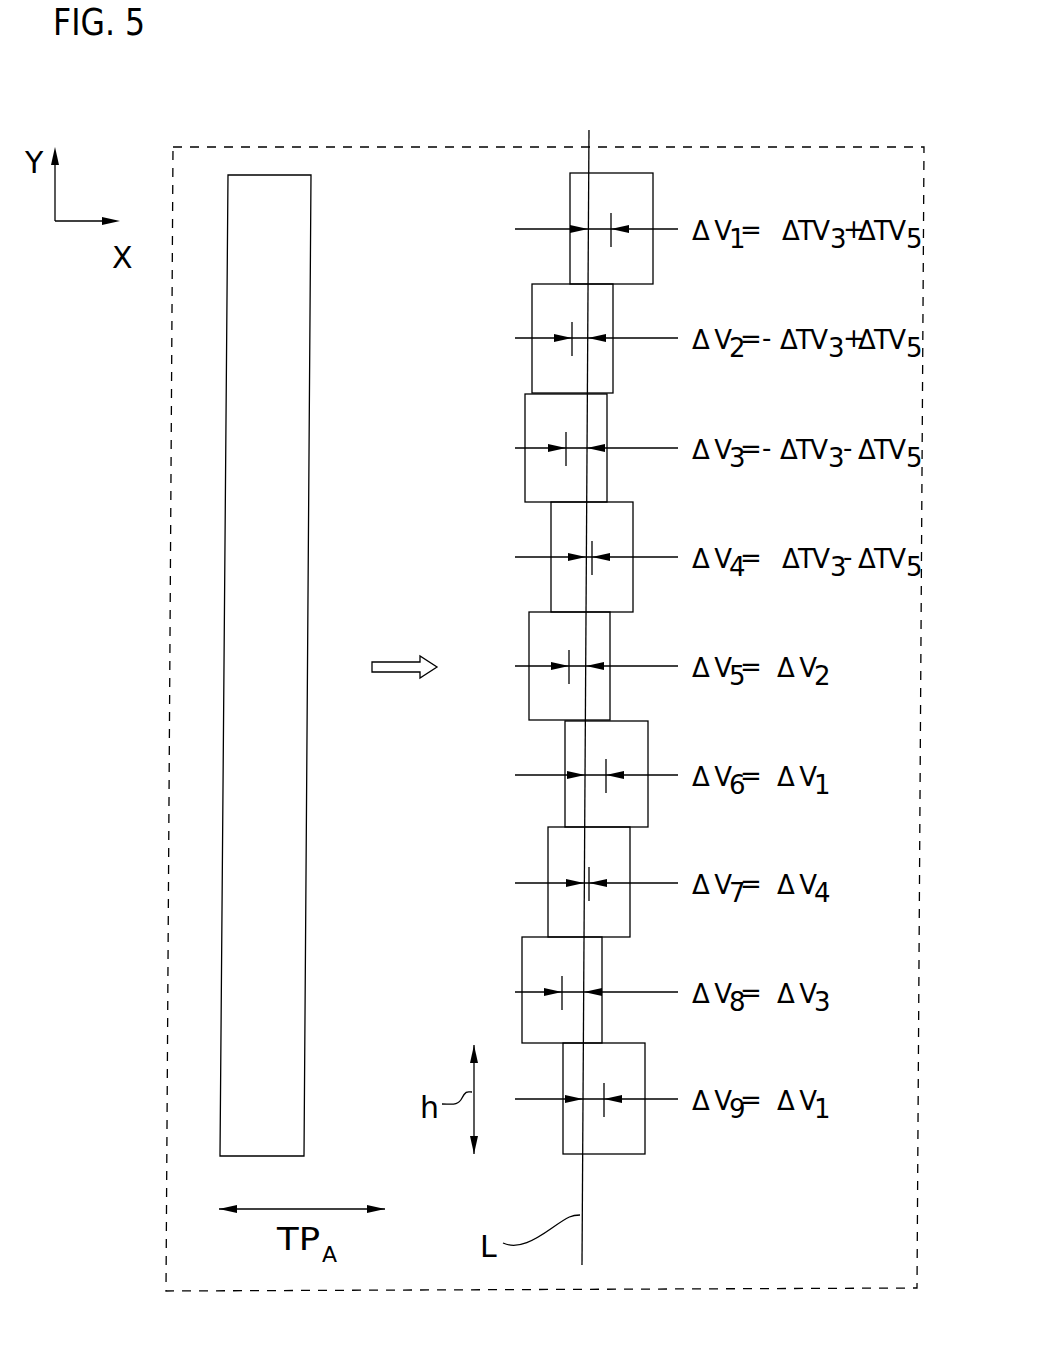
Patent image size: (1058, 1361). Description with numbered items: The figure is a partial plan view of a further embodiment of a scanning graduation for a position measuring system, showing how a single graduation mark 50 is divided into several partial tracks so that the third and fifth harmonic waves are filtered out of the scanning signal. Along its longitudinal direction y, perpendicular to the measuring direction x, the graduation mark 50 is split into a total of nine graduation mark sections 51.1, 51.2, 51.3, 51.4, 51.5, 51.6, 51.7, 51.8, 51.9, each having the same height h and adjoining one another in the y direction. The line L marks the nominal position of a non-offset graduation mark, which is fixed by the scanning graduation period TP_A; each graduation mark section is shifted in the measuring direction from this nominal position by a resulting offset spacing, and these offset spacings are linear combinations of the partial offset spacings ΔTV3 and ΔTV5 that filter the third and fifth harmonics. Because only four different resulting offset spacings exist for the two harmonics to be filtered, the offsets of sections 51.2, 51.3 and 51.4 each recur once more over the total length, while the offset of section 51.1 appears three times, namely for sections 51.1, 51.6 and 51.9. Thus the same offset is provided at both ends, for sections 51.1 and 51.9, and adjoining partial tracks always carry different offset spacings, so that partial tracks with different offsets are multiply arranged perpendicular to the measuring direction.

The graduation mark 50 is at (235, 829).
The graduation mark section 51.1 is at (597, 203).
The graduation mark section 51.2 is at (597, 312).
The graduation mark section 51.3 is at (597, 422).
The graduation mark section 51.4 is at (597, 531).
The graduation mark section 51.5 is at (597, 640).
The graduation mark section 51.6 is at (597, 749).
The graduation mark section 51.7 is at (597, 857).
The graduation mark section 51.8 is at (597, 966).
The graduation mark section 51.9 is at (597, 1073).